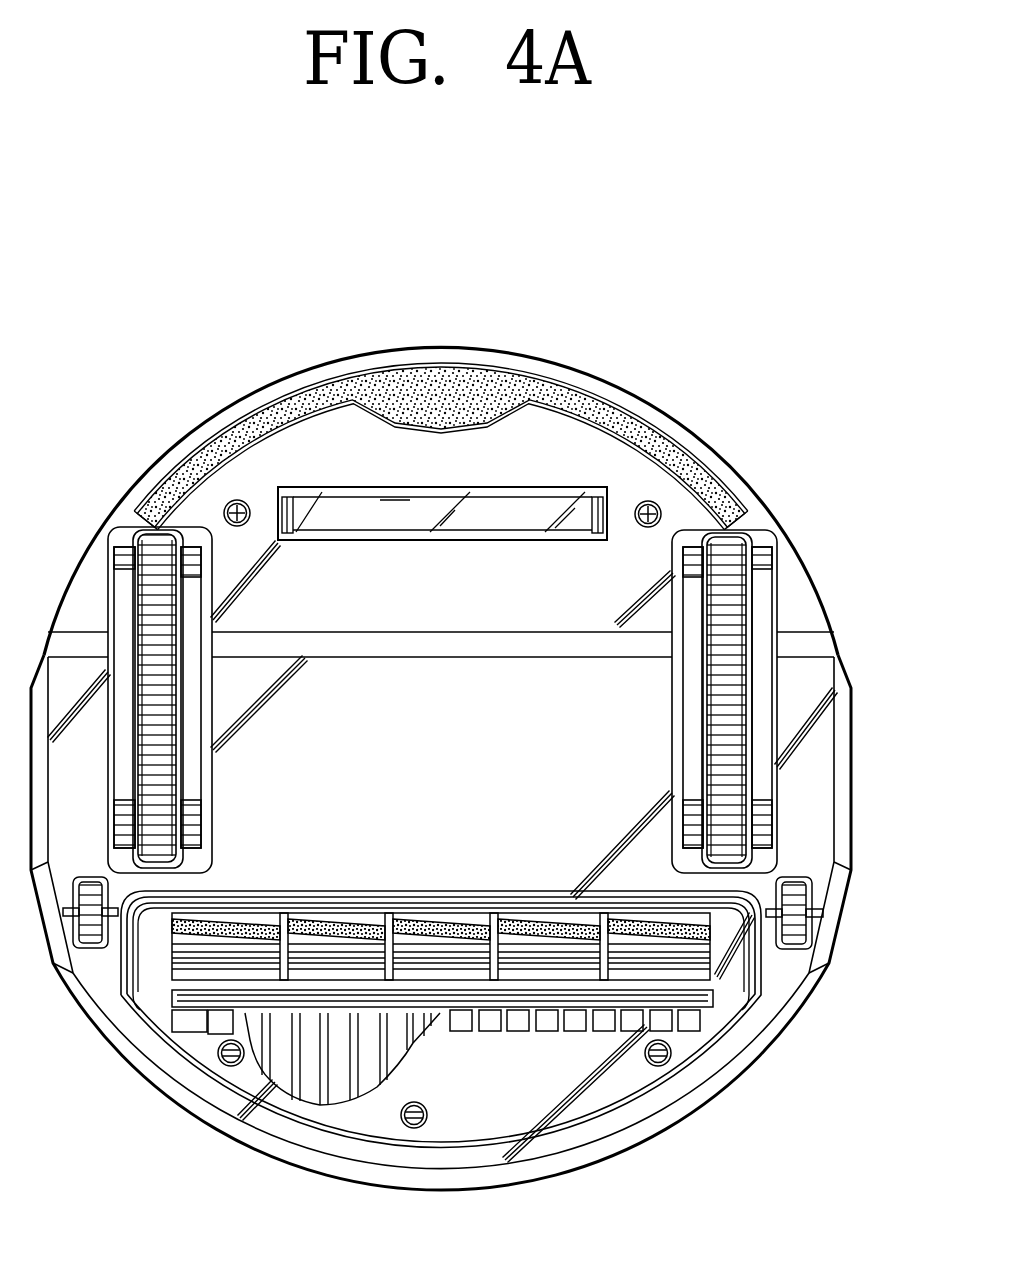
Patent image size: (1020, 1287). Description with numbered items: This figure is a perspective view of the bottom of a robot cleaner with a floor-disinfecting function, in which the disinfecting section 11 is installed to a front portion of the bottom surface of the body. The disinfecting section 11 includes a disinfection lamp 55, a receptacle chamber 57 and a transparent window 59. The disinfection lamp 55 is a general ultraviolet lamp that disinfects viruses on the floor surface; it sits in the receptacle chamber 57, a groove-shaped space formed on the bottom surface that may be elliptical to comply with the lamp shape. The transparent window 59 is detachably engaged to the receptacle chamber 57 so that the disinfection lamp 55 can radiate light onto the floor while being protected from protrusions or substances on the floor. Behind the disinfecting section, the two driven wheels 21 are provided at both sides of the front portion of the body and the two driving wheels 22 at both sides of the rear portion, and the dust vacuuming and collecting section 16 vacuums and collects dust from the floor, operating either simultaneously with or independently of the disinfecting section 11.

The disinfecting section 11 is at (473, 486).
The dust vacuuming and collecting section 16 is at (607, 1093).
The driven wheels 21 is at (798, 701).
The driving wheels 22 is at (737, 728).
The disinfection lamp 55 is at (532, 542).
The receptacle chamber 57 is at (445, 542).
The transparent window 59 is at (357, 517).